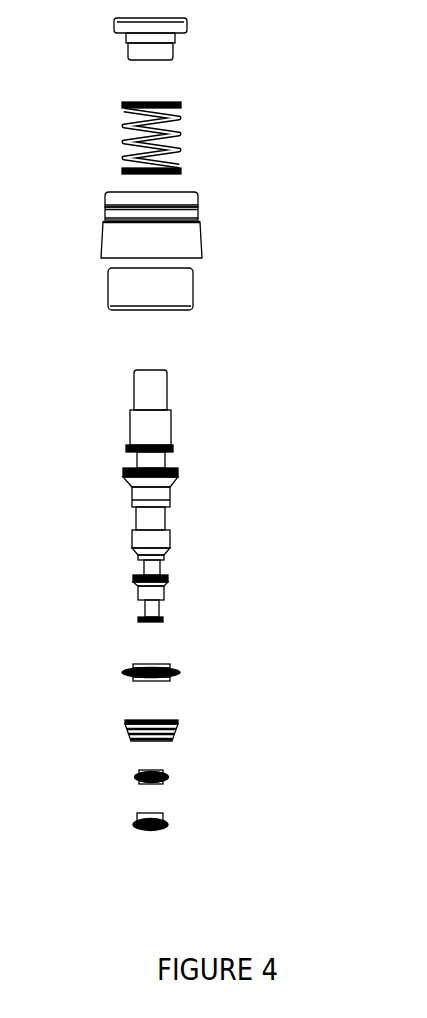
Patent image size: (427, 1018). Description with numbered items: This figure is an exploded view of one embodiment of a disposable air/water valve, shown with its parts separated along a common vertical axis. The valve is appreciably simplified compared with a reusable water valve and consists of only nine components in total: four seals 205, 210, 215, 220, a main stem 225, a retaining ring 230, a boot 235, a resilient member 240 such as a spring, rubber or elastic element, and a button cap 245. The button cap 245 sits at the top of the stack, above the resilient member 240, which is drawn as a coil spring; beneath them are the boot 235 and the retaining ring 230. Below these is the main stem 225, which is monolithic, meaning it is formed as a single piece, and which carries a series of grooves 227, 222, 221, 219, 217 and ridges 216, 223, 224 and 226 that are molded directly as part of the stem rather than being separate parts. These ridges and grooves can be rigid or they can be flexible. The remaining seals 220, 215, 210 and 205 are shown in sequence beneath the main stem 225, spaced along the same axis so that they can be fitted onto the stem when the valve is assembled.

The seal 205 is at (148, 817).
The seal 210 is at (165, 773).
The seal 215 is at (152, 730).
The ridge 216 is at (163, 620).
The groove 217 is at (143, 612).
The groove 219 is at (143, 568).
The seal 220 is at (160, 667).
The groove 221 is at (140, 523).
The groove 222 is at (134, 462).
The ridge 223 is at (173, 449).
The ridge 224 is at (176, 473).
The main stem 225 is at (150, 517).
The ridge 226 is at (162, 577).
The groove 227 is at (134, 393).
The retaining ring 230 is at (177, 291).
The boot 235 is at (177, 246).
The resilient member 240 is at (178, 132).
The button cap 245 is at (187, 22).